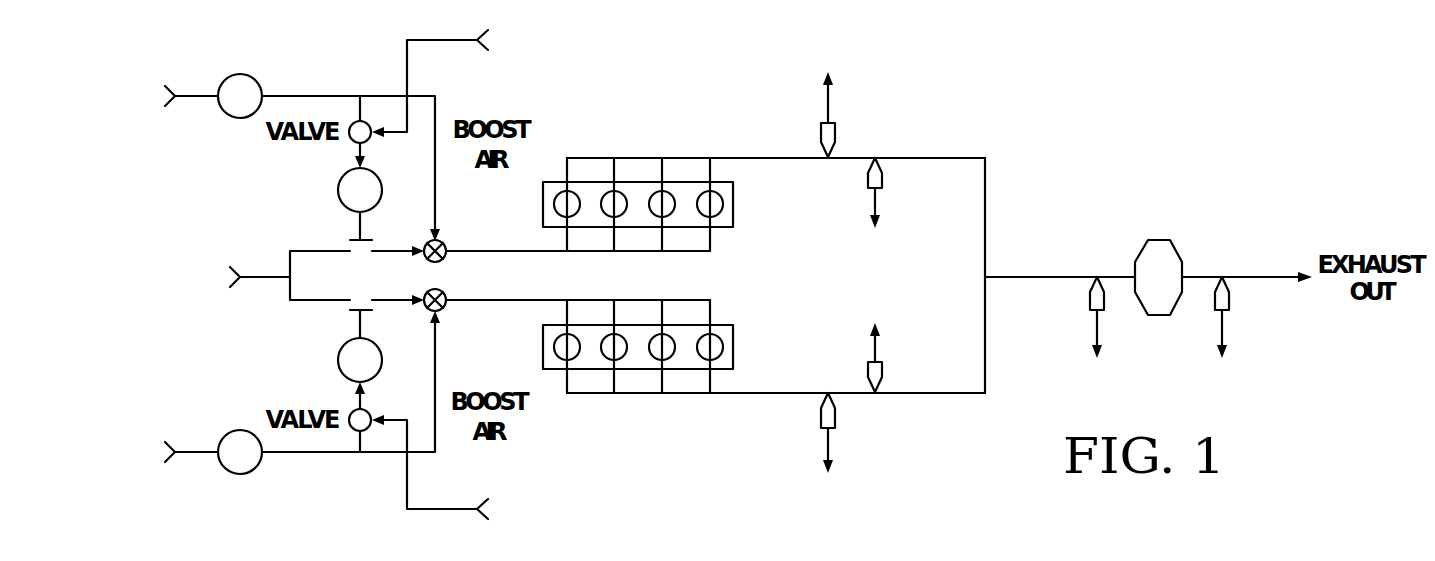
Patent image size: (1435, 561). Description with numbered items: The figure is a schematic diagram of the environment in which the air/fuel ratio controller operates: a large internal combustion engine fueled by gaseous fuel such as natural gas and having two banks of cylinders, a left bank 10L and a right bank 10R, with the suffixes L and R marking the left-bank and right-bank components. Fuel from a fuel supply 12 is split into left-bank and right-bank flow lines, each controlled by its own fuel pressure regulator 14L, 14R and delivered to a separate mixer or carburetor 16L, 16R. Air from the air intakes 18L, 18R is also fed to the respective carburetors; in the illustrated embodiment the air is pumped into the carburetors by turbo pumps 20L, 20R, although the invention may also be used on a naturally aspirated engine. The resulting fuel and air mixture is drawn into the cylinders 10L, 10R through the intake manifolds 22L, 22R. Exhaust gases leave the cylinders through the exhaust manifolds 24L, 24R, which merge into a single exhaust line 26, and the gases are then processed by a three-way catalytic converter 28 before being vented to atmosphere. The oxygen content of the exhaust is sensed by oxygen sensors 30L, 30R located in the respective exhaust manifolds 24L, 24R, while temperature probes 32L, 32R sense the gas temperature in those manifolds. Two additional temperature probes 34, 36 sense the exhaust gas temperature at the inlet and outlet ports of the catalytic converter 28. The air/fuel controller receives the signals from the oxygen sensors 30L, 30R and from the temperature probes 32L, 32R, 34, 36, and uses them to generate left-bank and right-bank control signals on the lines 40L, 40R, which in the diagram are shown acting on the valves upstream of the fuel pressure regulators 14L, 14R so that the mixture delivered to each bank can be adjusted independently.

The left bank of cylinders 10L is at (753, 238).
The right bank of cylinders 10R is at (752, 320).
The fuel supply 12 is at (273, 290).
The left-bank fuel pressure regulator 14L is at (386, 180).
The right-bank fuel pressure regulator 14R is at (392, 372).
The left-bank mixer or carburetor 16L is at (445, 259).
The right-bank mixer or carburetor 16R is at (446, 292).
The left-bank air intake 18L is at (145, 111).
The right-bank air intake 18R is at (145, 468).
The left-bank turbo pump 20L is at (263, 86).
The right-bank turbo pump 20R is at (263, 462).
The left-bank intake manifold 22L is at (595, 251).
The right-bank intake manifold 22R is at (675, 300).
The left-bank exhaust manifold 24L is at (567, 157).
The right-bank exhaust manifold 24R is at (568, 395).
The exhaust line 26 is at (1033, 277).
The three-way catalytic converter 28 is at (1182, 250).
The left-bank oxygen sensor 30L is at (820, 131).
The right-bank oxygen sensor 30R is at (822, 418).
The left-bank temperature probe 32L is at (878, 188).
The right-bank temperature probe 32R is at (882, 365).
The converter inlet temperature probe 34 is at (1102, 308).
The converter outlet temperature probe 36 is at (1218, 306).
The left-bank control signal line 40L is at (410, 40).
The right-bank control signal line 40R is at (407, 478).